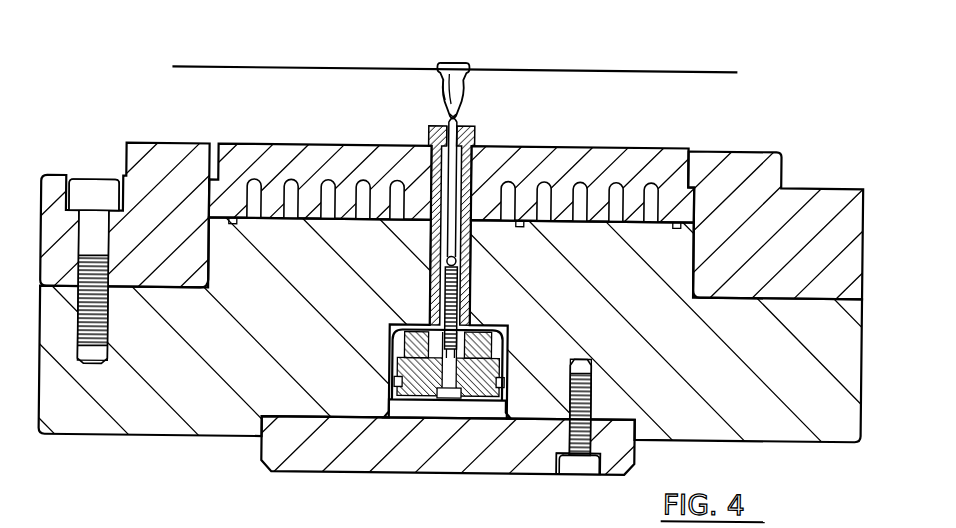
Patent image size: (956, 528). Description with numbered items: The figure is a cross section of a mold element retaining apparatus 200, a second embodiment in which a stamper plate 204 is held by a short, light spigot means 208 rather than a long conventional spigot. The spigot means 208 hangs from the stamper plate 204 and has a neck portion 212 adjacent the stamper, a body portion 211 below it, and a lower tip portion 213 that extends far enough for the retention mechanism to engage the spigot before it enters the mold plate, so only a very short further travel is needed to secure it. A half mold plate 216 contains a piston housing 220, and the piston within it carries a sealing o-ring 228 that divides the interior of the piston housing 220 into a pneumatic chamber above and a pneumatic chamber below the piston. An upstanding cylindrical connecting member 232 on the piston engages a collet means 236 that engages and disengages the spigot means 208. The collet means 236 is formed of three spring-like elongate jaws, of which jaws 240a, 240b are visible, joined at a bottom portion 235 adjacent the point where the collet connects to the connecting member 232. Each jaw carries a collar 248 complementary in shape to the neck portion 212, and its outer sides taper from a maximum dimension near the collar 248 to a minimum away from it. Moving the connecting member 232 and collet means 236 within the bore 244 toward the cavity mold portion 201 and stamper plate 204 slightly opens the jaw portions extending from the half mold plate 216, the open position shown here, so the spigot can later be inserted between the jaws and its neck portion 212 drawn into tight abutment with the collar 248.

The mold element retaining apparatus 200 is at (451, 246).
The cavity mold portion 201 is at (662, 146).
The stamper plate 204 is at (580, 69).
The spigot means 208 is at (457, 63).
The body portion 211 is at (440, 84).
The neck portion 212 is at (465, 73).
The lower tip portion 213 is at (446, 116).
The half mold plate 216 is at (170, 207).
The piston housing 220 is at (507, 343).
The o-ring 228 is at (508, 380).
The connecting member 232 is at (467, 284).
The bottom portion 235 is at (466, 263).
The collet means 236 is at (468, 239).
The elongate jaw 240a is at (472, 131).
The elongate jaw 240b is at (428, 131).
The bore 244 is at (485, 160).
The collar 248 is at (456, 127).